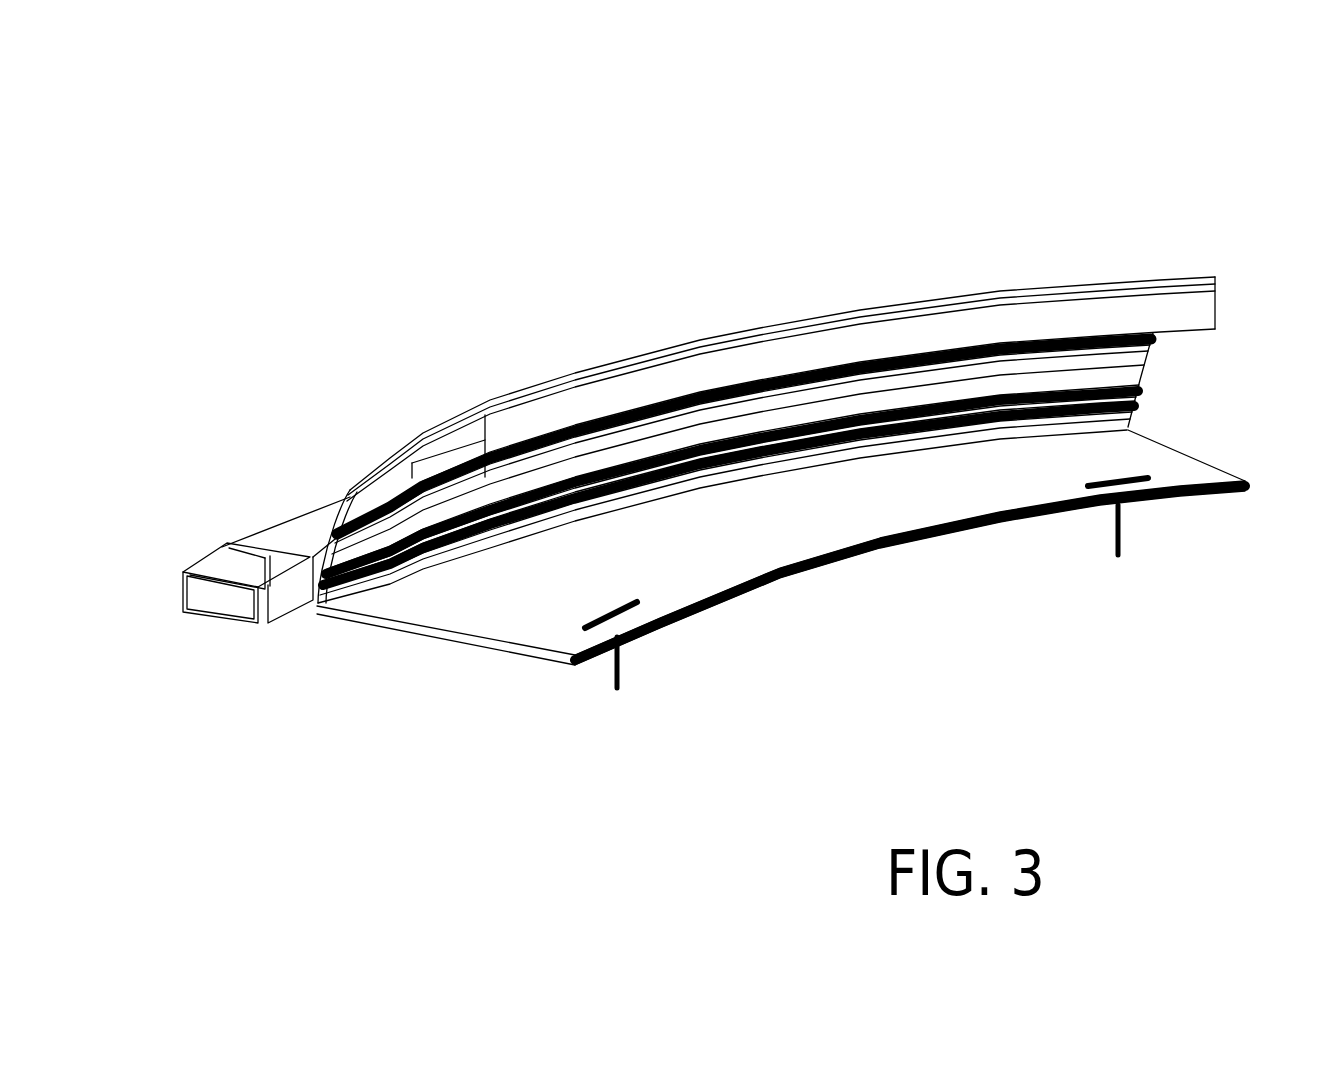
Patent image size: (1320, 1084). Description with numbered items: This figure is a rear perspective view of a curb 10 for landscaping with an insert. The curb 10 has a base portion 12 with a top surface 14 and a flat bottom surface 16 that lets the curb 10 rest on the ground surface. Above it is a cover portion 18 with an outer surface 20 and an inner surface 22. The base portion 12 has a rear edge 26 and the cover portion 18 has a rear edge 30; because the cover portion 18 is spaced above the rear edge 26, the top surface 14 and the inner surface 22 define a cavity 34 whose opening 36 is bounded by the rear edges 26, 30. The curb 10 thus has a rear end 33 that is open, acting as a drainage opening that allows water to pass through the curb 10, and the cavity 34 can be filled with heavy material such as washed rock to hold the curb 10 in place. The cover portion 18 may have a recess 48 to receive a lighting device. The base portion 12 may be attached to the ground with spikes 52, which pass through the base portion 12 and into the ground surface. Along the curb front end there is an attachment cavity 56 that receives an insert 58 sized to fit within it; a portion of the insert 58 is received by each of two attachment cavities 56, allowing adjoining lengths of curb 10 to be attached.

The curb 10 is at (707, 455).
The base portion 12 is at (895, 505).
The top surface 14 is at (823, 510).
The bottom surface 16 is at (951, 538).
The cover portion 18 is at (573, 393).
The outer surface 20 is at (485, 415).
The inner surface 22 is at (412, 463).
The rear edge 26 is at (1057, 513).
The rear edge 30 is at (968, 330).
The rear end 33 is at (1132, 310).
The cavity 34 is at (447, 594).
The opening 36 is at (1208, 404).
The recess 48 is at (347, 507).
The spikes 52 is at (619, 688).
The attachment cavity 56 is at (227, 548).
The insert 58 is at (213, 605).